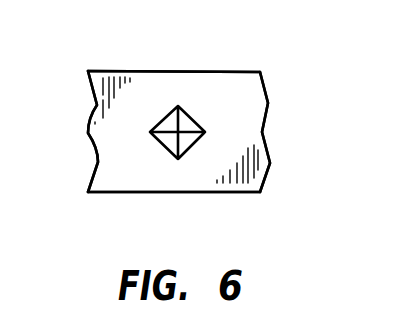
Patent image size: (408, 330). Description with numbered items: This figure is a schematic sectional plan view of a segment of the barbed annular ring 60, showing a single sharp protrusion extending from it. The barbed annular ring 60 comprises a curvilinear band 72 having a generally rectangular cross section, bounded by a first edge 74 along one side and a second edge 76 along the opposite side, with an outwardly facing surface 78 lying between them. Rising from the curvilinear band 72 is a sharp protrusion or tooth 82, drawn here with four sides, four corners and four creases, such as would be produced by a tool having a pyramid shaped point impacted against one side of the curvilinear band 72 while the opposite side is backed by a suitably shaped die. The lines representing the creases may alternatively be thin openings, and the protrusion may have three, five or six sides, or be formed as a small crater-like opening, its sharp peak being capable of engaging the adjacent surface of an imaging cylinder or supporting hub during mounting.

The barbed annular ring 60 is at (302, 92).
The curvilinear band 72 is at (92, 144).
The first edge 74 is at (222, 72).
The second edge 76 is at (138, 193).
The outwardly facing surface 78 is at (245, 132).
The sharp protrusion or tooth 82 is at (175, 108).